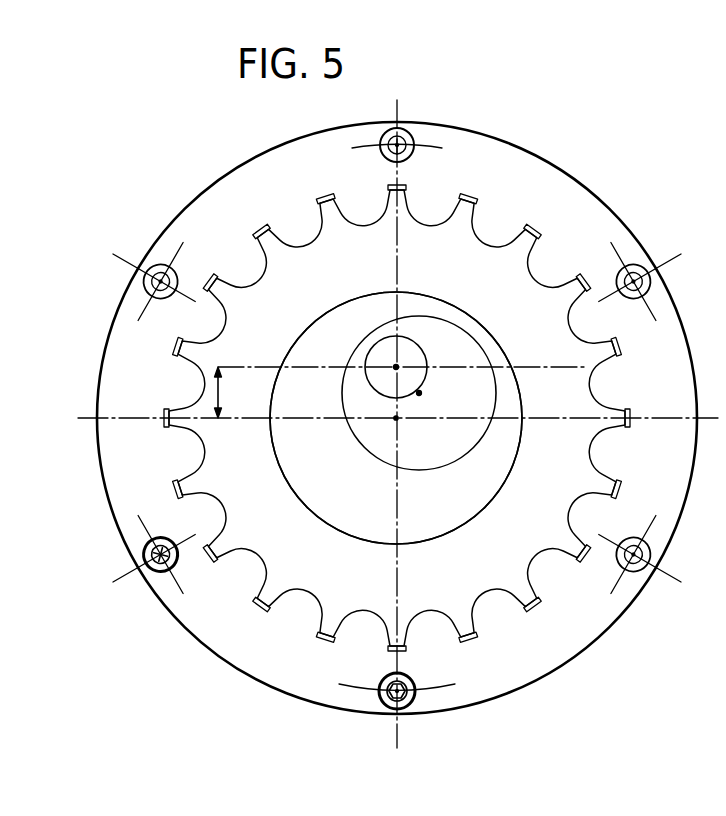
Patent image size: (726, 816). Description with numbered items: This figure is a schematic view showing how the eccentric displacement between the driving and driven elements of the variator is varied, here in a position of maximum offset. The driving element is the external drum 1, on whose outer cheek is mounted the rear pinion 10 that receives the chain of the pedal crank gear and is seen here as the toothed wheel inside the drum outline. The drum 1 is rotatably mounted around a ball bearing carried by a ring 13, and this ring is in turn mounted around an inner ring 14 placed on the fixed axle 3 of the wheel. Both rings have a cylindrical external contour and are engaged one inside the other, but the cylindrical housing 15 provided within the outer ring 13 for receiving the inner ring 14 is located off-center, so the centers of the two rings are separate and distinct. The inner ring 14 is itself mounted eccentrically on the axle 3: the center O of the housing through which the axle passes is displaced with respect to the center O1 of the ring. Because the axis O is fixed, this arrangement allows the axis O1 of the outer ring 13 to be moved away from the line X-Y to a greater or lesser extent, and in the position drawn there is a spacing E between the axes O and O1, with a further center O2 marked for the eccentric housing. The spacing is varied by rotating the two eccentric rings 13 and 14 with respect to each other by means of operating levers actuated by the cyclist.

The external drum 1 is at (197, 192).
The rear pinion 10 is at (472, 210).
The axle 3 is at (405, 345).
The ring 13 is at (450, 513).
The inner ring 14 is at (458, 442).
The cylindrical housing 15 is at (507, 320).
The center of the fixed axle O is at (396, 367).
The center of the outer ring O1 is at (396, 418).
The center of bearing O2 is at (419, 393).
The spacing E is at (228, 392).
The line X-Y X is at (407, 413).
The line X- Y is at (398, 604).